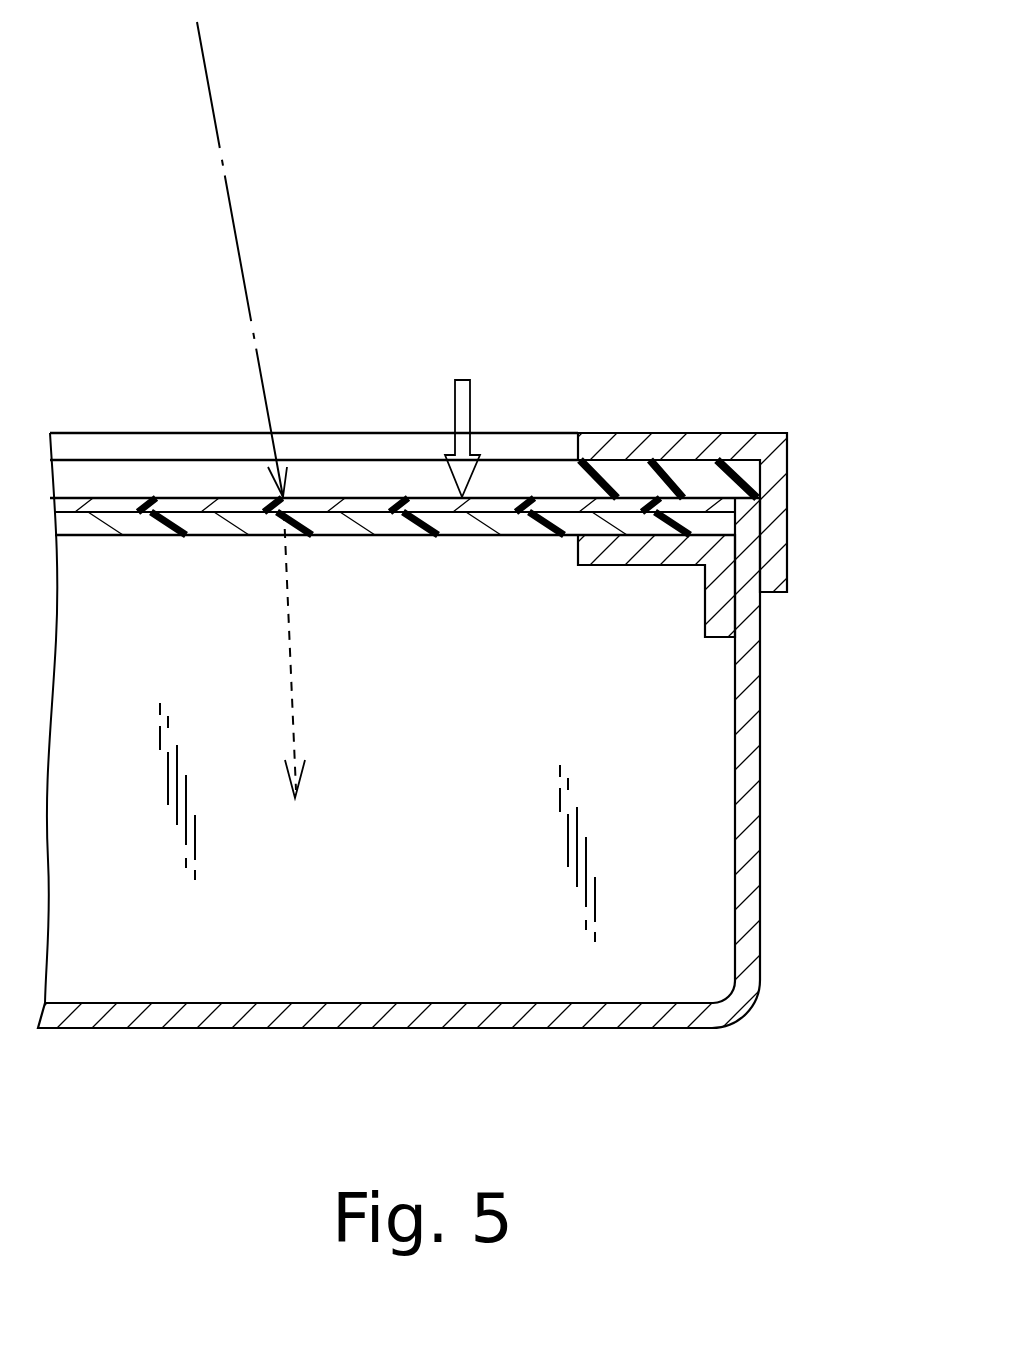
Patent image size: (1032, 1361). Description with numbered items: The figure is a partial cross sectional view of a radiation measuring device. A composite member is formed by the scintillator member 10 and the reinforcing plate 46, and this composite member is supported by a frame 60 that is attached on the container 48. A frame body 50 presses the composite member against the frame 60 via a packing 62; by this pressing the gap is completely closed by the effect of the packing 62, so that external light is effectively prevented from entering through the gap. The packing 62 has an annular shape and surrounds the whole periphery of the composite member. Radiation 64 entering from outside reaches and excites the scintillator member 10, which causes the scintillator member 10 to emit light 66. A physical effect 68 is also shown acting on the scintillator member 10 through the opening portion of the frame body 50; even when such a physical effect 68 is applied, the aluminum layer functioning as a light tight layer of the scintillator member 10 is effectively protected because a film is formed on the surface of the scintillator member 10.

The scintillator member 10 is at (327, 497).
The reinforcing plate 46 is at (462, 537).
The container 48 is at (762, 770).
The frame body 50 is at (740, 433).
The frame 60 is at (650, 565).
The packing 62 is at (550, 462).
The radiation 64 is at (218, 147).
The light 66 is at (293, 690).
The physical effect 68 is at (463, 380).